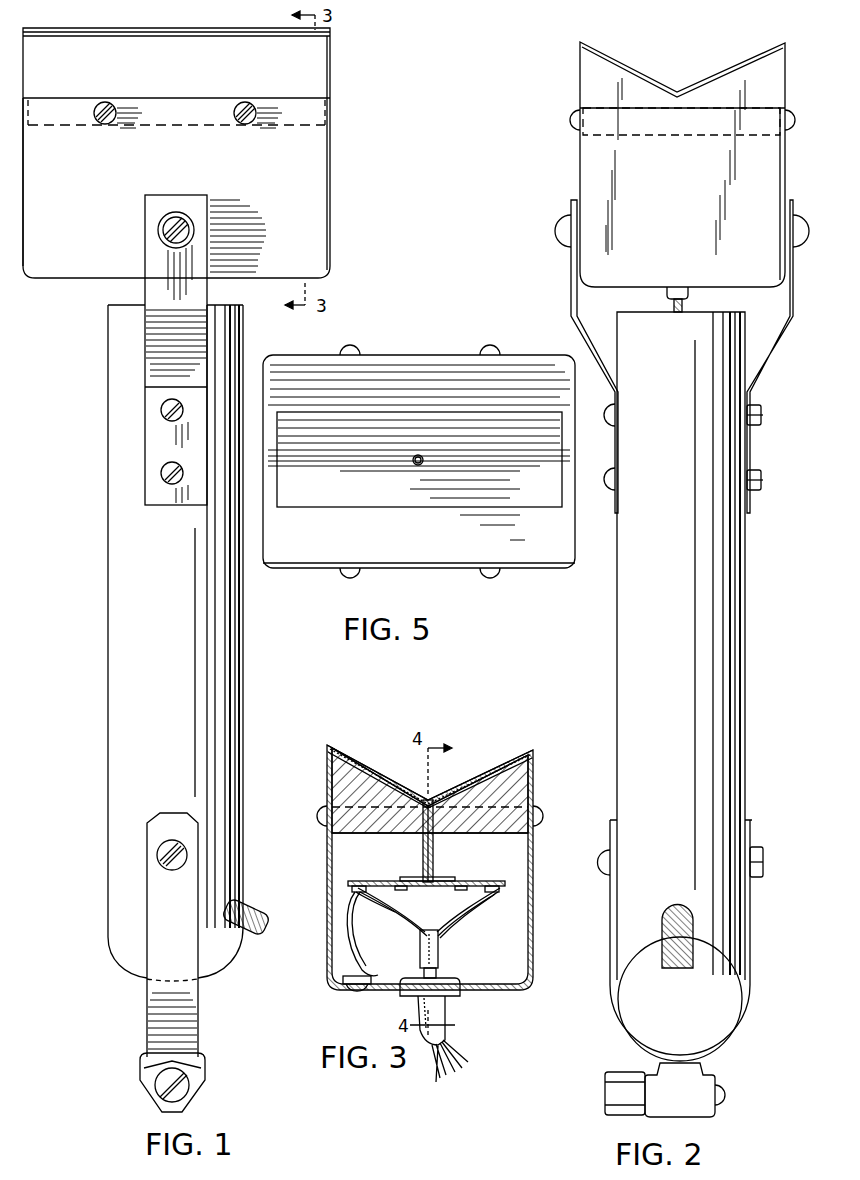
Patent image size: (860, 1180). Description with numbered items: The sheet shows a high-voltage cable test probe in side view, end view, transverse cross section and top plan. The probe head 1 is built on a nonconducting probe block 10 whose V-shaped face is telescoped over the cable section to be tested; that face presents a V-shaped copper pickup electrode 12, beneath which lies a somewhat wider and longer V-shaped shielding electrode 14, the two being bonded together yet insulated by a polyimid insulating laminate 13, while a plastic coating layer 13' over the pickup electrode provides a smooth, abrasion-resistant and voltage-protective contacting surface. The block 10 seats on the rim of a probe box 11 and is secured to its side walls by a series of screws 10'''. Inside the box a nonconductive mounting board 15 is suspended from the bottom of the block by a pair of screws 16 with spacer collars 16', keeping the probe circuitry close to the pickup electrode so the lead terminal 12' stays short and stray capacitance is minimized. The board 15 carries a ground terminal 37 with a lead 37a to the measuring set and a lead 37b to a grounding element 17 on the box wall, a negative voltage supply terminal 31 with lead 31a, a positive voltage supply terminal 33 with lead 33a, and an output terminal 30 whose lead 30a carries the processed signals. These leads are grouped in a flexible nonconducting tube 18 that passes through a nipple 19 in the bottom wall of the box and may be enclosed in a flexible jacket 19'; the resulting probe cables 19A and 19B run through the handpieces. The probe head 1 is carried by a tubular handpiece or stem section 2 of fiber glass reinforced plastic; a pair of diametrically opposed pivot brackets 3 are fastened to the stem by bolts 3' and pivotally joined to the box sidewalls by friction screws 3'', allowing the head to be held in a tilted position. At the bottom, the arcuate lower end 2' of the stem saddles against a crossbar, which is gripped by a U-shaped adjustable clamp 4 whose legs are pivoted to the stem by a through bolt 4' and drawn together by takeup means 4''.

In FIG. 1, the probe head 1 is at (193, 141).
In FIG. 3, the probe head 1 is at (432, 849).
In FIG. 2, the probe head 1 is at (669, 160).
In FIG. 1, the handpiece or stem section 2 is at (159, 621).
In FIG. 2, the handpiece or stem section 2 is at (664, 646).
In FIG. 1, the lower end of probe stem 2' is at (171, 961).
In FIG. 2, the lower end of probe stem 2' is at (680, 999).
In FIG. 1, the pivot brackets 3 is at (186, 350).
In FIG. 2, the pivot brackets 3 is at (680, 356).
In FIG. 1, the screws or bolts 3' is at (167, 451).
In FIG. 2, the screws or bolts 3' is at (697, 447).
In FIG. 1, the friction screws 3'' is at (157, 230).
In FIG. 2, the friction screws 3'' is at (679, 228).
In FIG. 1, the adjustable clamp 4 is at (192, 935).
In FIG. 2, the adjustable clamp 4 is at (658, 937).
In FIG. 1, the through bolt 4' is at (136, 855).
In FIG. 2, the through bolt 4' is at (698, 860).
In FIG. 1, the takeup means 4'' is at (185, 1082).
In FIG. 2, the takeup means 4'' is at (647, 1090).
In FIG. 1, the probe block 10 is at (193, 153).
In FIG. 5, the probe block 10 is at (417, 475).
In FIG. 3, the probe block 10 is at (412, 867).
In FIG. 2, the probe block 10 is at (663, 164).
In FIG. 1, the screws 10''' is at (178, 98).
In FIG. 5, the screws 10''' is at (420, 458).
In FIG. 3, the screws 10''' is at (438, 811).
In FIG. 2, the screws 10''' is at (690, 109).
In FIG. 1, the probe box 11 is at (318, 183).
In FIG. 3, the probe box 11 is at (530, 935).
In FIG. 2, the probe box 11 is at (582, 165).
In FIG. 1, the pickup electrode 12 is at (176, 112).
In FIG. 5, the pickup electrode 12 is at (419, 486).
In FIG. 3, the pickup electrode 12 is at (430, 777).
In FIG. 2, the pickup electrode 12 is at (681, 121).
In FIG. 5, the lead terminal 12' is at (394, 474).
In FIG. 3, the insulating laminate 13 is at (448, 771).
In FIG. 1, the plastic coating layer 13' is at (176, 18).
In FIG. 5, the plastic coating layer 13' is at (419, 572).
In FIG. 3, the plastic coating layer 13' is at (431, 756).
In FIG. 2, the plastic coating layer 13' is at (682, 65).
In FIG. 3, the shielding electrode 14 is at (528, 769).
In FIG. 3, the mounting board 15 is at (492, 875).
In FIG. 3, the screws 16 is at (446, 841).
In FIG. 3, the spacer collars 16' is at (452, 844).
In FIG. 3, the grounding element 17 is at (355, 975).
In FIG. 3, the flexible nonconducting tube 18 is at (440, 950).
In FIG. 3, the nipple 19 is at (455, 1019).
In FIG. 3, the flexible nonconducting jacket 19' is at (460, 1053).
In FIG. 1, the probe cable 19A is at (254, 944).
In FIG. 2, the probe cable 19A is at (704, 957).
In FIG. 1, the probe cable 19B is at (248, 932).
In FIG. 2, the probe cable 19B is at (690, 960).
In FIG. 3, the output terminal 30 is at (485, 896).
In FIG. 3, the lead 30a is at (470, 925).
In FIG. 3, the negative voltage supply terminal 31 is at (404, 878).
In FIG. 3, the lead 31a is at (410, 900).
In FIG. 3, the positive voltage supply terminal 33 is at (505, 893).
In FIG. 3, the lead 33a is at (477, 916).
In FIG. 3, the ground terminal 37 is at (352, 889).
In FIG. 3, the lead 37a is at (390, 913).
In FIG. 3, the lead 37b is at (368, 950).